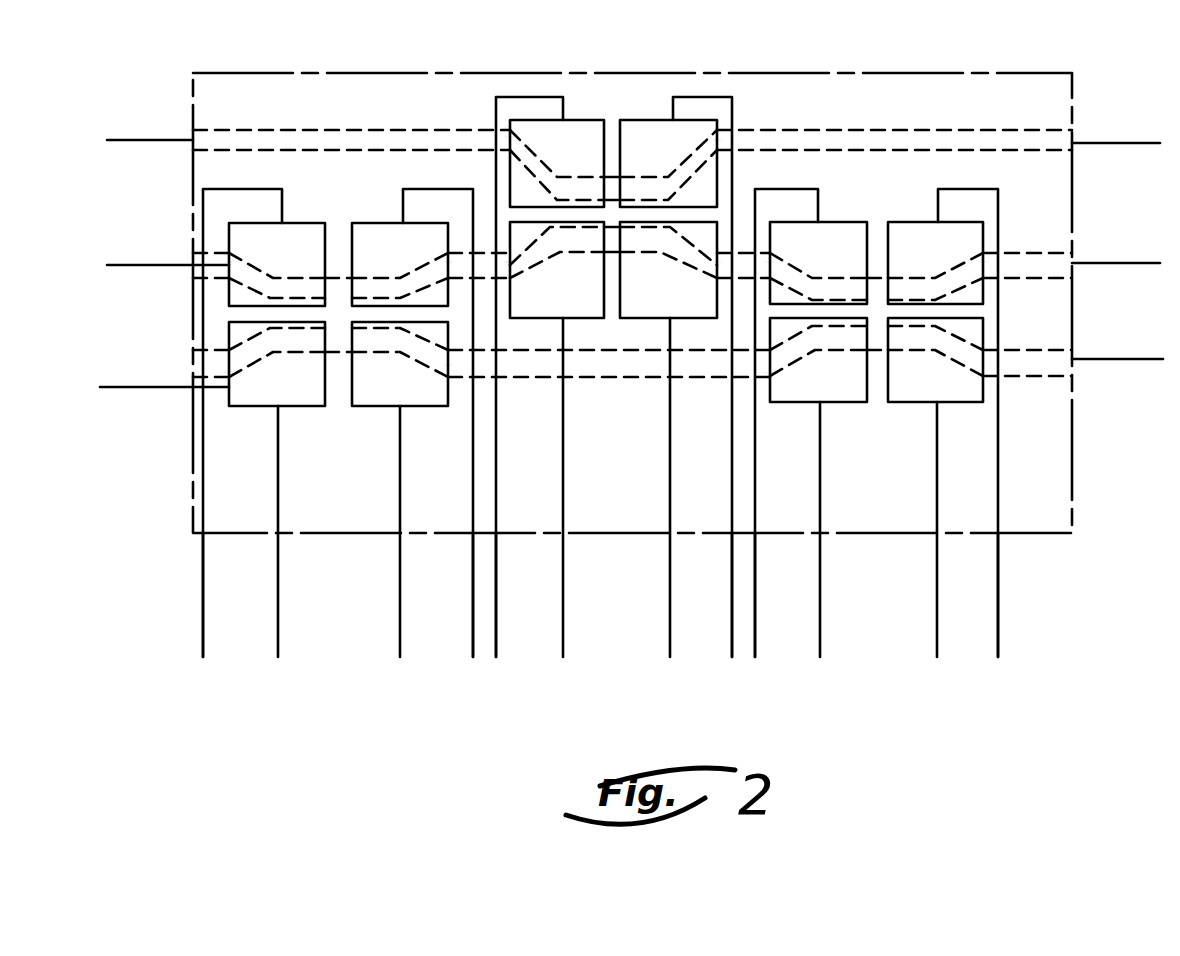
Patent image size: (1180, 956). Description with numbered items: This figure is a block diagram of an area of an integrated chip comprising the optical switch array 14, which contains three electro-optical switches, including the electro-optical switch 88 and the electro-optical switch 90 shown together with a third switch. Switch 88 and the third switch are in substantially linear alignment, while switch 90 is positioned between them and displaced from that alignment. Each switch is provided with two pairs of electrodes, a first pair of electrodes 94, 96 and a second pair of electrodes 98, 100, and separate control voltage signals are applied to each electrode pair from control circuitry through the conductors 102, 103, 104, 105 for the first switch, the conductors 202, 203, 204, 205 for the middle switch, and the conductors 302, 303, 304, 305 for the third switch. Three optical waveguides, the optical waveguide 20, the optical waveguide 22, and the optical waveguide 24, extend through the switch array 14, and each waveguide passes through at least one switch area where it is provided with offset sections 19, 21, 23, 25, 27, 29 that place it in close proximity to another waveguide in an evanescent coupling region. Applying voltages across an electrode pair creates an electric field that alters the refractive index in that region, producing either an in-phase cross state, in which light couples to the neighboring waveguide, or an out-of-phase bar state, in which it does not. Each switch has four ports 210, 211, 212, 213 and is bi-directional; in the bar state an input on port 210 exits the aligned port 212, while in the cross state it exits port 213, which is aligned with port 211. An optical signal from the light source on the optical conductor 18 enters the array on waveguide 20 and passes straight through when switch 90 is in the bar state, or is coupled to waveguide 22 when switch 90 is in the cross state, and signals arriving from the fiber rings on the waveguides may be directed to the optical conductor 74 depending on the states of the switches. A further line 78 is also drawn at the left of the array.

The optical switch array 14 is at (360, 73).
The optical conductor 18 is at (138, 140).
The offset section 19 is at (612, 178).
The optical waveguide 20 is at (334, 130).
The offset section 21 is at (884, 277).
The optical waveguide 22 is at (455, 284).
The offset section 23 is at (613, 247).
The optical waveguide 24 is at (514, 377).
The offset section 25 is at (337, 275).
The offset section 27 is at (878, 350).
The offset section 29 is at (347, 355).
The optical conductor 74 is at (133, 268).
The row conductor 78 is at (134, 391).
The electro-optical switch 88 is at (309, 222).
The electro-optical switch 90 is at (584, 120).
The electrode 94 is at (288, 268).
The electrode 96 is at (289, 397).
The electrode 98 is at (409, 266).
The electrode 100 is at (405, 397).
The conductor 102 is at (226, 583).
The conductor 103 is at (279, 607).
The conductor 104 is at (401, 585).
The conductor 105 is at (472, 637).
The conductor 202 is at (497, 610).
The conductor 203 is at (565, 617).
The conductor 204 is at (672, 572).
The conductor 205 is at (731, 624).
The port 210 is at (229, 262).
The port 211 is at (510, 262).
The port 212 is at (448, 262).
The port 213 is at (717, 262).
The conductor 302 is at (757, 600).
The conductor 303 is at (822, 614).
The conductor 304 is at (939, 592).
The conductor 305 is at (1000, 613).